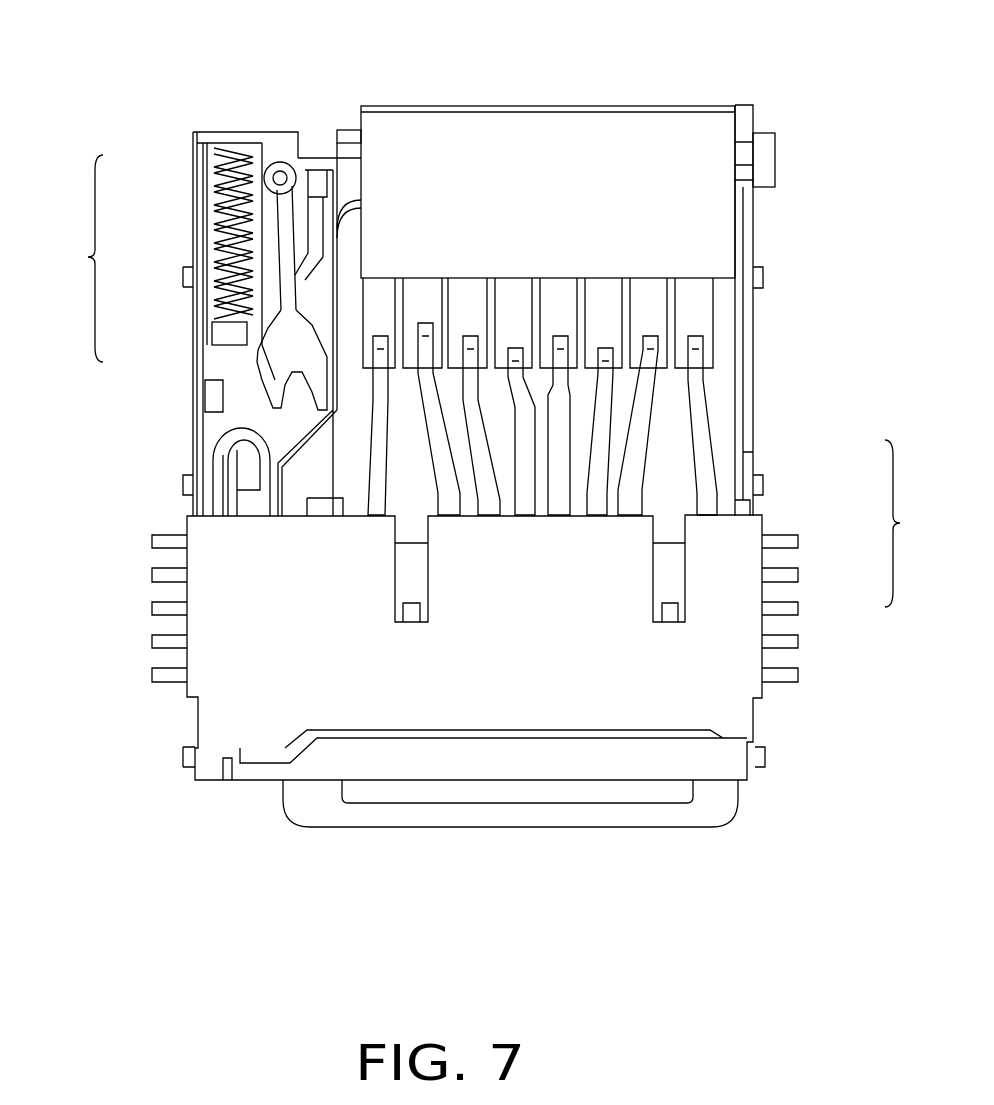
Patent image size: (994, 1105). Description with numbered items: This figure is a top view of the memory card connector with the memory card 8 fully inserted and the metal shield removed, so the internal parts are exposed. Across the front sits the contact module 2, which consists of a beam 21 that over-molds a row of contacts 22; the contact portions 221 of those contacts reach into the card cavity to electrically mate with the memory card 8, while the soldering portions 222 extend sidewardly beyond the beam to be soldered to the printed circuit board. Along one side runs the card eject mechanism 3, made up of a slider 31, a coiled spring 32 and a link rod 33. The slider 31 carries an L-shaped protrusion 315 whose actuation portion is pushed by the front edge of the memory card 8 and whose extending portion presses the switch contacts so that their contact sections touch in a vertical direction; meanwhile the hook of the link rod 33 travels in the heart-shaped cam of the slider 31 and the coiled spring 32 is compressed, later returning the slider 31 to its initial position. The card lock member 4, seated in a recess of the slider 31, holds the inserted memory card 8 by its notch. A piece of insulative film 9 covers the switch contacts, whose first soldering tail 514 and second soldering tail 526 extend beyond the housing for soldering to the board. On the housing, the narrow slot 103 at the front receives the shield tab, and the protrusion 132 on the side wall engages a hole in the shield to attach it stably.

The contact module 2 is at (905, 523).
The card eject mechanism 3 is at (80, 258).
The card lock member 4 is at (228, 447).
The memory card 8 is at (325, 805).
The insulative film 9 is at (552, 165).
The beam 21 is at (728, 563).
The contacts 22 is at (707, 418).
The slider 31 is at (262, 355).
The coiled spring 32 is at (225, 228).
The link rod 33 is at (280, 202).
The narrow slot 103 is at (228, 768).
The protrusion 132 is at (185, 486).
The contact portions 221 is at (695, 353).
The soldering portions 222 is at (163, 641).
The L-shaped protrusion 315 is at (357, 185).
The first soldering tail 514 is at (341, 130).
The second soldering tail 526 is at (762, 162).